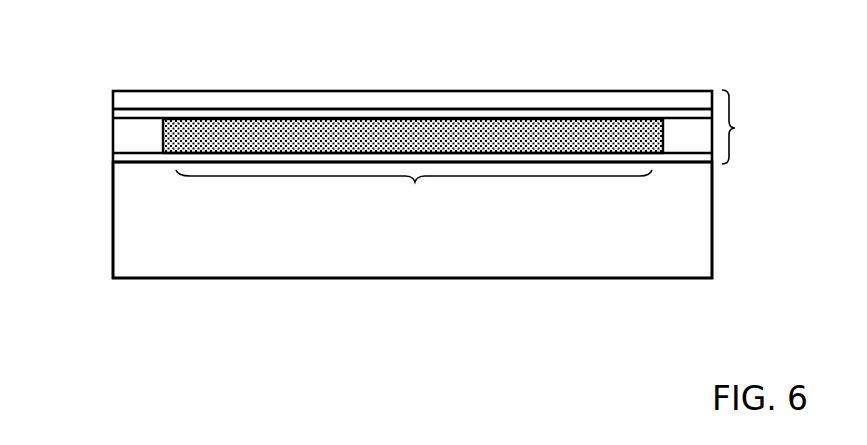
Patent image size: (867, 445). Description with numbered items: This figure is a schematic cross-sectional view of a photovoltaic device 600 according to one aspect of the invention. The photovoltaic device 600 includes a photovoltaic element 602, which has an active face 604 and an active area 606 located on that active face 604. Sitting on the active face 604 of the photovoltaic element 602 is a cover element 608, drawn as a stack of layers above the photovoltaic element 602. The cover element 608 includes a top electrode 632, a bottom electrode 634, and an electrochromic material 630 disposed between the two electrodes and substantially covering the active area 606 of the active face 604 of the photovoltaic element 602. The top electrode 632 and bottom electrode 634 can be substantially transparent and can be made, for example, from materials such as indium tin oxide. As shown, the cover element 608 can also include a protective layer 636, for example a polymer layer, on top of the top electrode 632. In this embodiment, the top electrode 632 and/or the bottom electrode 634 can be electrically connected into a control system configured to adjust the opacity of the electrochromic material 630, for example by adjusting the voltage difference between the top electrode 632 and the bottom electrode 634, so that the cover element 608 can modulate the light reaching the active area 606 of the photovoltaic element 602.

The photovoltaic device 600 is at (740, 40).
The photovoltaic element 602 is at (683, 228).
The active face 604 is at (682, 166).
The active area 606 is at (415, 182).
The cover element 608 is at (751, 127).
The electrochromic material 630 is at (345, 135).
The top electrode 632 is at (113, 114).
The bottom electrode 634 is at (113, 157).
The protective layer 636 is at (280, 100).